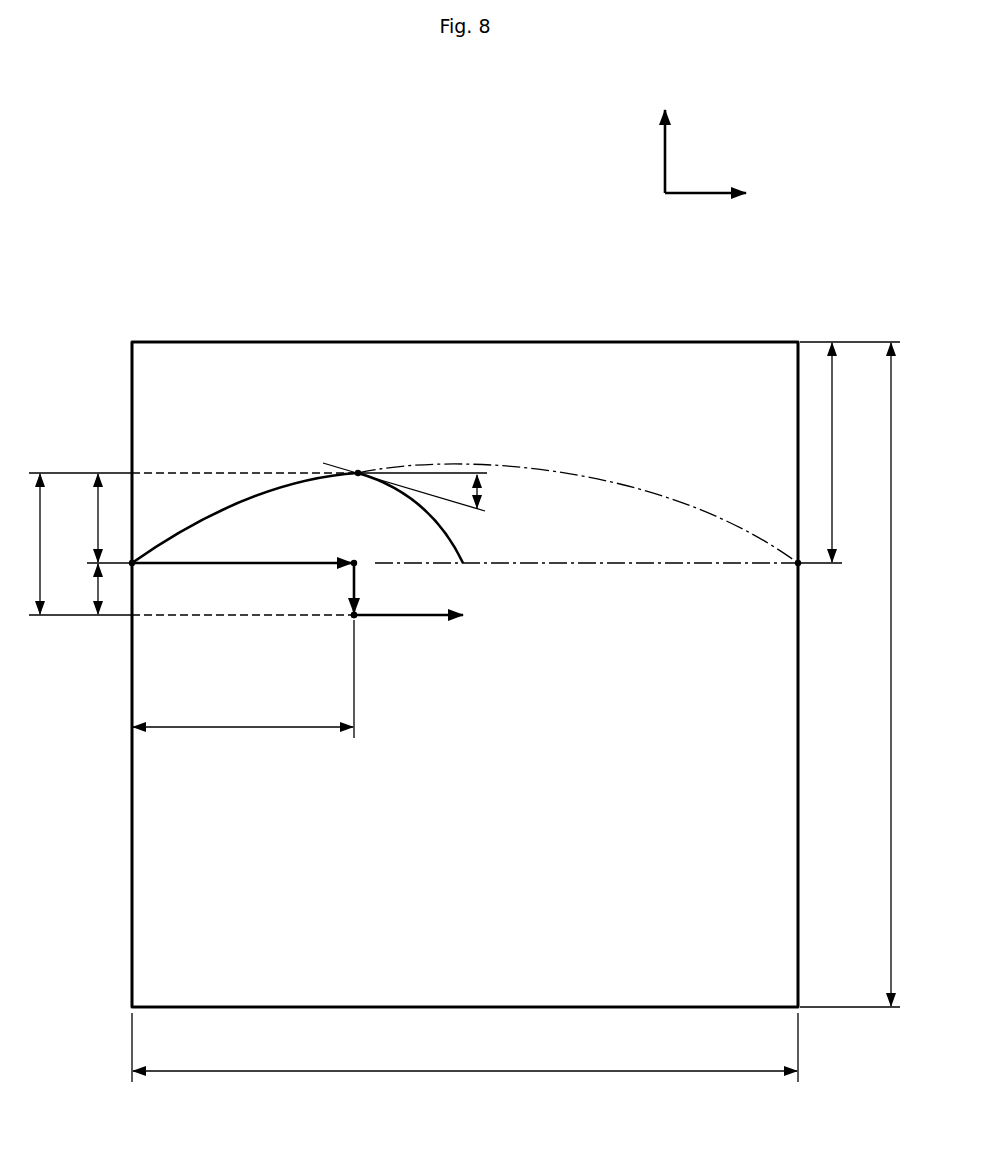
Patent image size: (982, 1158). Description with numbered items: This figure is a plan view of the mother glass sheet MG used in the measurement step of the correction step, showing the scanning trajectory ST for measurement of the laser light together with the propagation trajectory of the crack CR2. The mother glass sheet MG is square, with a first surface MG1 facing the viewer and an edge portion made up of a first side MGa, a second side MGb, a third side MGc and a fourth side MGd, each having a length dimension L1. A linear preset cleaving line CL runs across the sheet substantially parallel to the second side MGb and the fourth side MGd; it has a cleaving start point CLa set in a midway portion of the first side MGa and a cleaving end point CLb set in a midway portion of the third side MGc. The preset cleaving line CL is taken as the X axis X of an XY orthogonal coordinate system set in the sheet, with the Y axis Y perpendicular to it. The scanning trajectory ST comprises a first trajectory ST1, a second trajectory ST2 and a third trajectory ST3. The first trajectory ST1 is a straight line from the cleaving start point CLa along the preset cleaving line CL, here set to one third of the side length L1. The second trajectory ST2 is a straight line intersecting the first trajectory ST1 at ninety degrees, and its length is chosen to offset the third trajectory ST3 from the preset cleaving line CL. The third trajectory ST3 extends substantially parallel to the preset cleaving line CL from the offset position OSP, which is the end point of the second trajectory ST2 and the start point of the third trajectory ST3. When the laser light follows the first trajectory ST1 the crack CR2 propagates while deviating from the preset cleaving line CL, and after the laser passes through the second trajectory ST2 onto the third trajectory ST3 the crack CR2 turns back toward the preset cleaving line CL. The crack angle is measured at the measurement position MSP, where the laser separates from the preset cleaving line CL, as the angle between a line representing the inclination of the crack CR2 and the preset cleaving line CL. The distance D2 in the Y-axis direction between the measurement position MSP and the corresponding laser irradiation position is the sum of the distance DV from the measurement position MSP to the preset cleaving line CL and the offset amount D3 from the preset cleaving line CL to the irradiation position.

The mother glass sheet MG is at (491, 312).
The first side MGa is at (132, 418).
The second side MGb is at (458, 1005).
The third side MGc is at (798, 783).
The fourth side MGd is at (352, 342).
The first surface MG1 is at (603, 373).
The preset cleaving line CL is at (656, 567).
The cleaving start point CLa is at (135, 566).
The cleaving end point CLb is at (800, 565).
The crack CR2 is at (185, 531).
The measurement position MSP is at (358, 478).
The first trajectory ST1 is at (237, 562).
The second trajectory ST2 is at (358, 584).
The third trajectory ST3 is at (418, 618).
The scanning trajectory ST is at (393, 632).
The offset position OSP is at (352, 620).
The distance between the crack and the laser light D2 is at (23, 544).
The distance from the measurement position to the preset cleaving line DV is at (80, 518).
The offset amount D3 is at (81, 589).
The length dimension of a side L1 is at (527, 723).
The X axis X is at (717, 193).
The Y axis Y is at (664, 137).